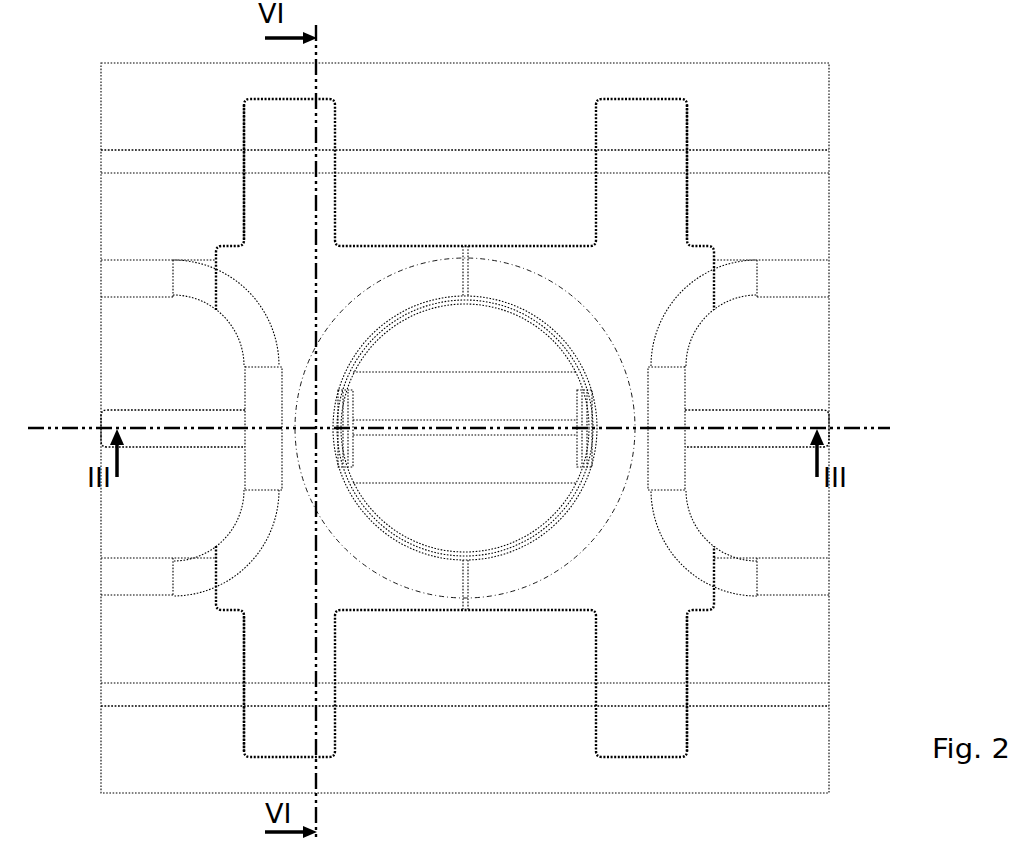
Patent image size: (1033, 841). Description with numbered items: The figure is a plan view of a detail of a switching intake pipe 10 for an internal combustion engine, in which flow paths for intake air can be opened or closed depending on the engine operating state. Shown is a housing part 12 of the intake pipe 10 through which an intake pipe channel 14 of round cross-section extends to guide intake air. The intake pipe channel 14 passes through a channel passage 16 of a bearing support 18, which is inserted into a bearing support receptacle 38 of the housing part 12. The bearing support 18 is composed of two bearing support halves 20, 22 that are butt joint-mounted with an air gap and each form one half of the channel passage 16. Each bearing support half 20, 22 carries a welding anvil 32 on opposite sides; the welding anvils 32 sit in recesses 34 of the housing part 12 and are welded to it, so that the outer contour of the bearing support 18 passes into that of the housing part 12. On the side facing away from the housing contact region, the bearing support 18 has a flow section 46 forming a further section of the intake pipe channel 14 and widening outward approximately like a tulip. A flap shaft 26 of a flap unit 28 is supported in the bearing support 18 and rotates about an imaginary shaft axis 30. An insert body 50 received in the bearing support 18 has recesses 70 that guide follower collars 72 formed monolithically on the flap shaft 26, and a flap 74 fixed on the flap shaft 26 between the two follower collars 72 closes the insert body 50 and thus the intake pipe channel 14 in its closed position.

The intake pipe 10 is at (86, 71).
The housing part 12 is at (168, 74).
The intake pipe channel 14 is at (485, 366).
The channel passage 16 is at (506, 336).
The bearing support 18 is at (252, 356).
The bearing support half 20 is at (257, 405).
The bearing support half 22 is at (663, 345).
The flap shaft 26 is at (813, 417).
The flap unit 28 is at (551, 505).
The shaft axis 30 is at (50, 425).
The welding anvil 32 is at (257, 110).
The recess 34 is at (244, 118).
The bearing support receptacle 38 is at (216, 290).
The flow section 46 is at (437, 272).
The insert body 50 is at (403, 362).
The recess 70 is at (338, 390).
The follower collar 72 is at (340, 466).
The flap 74 is at (440, 505).